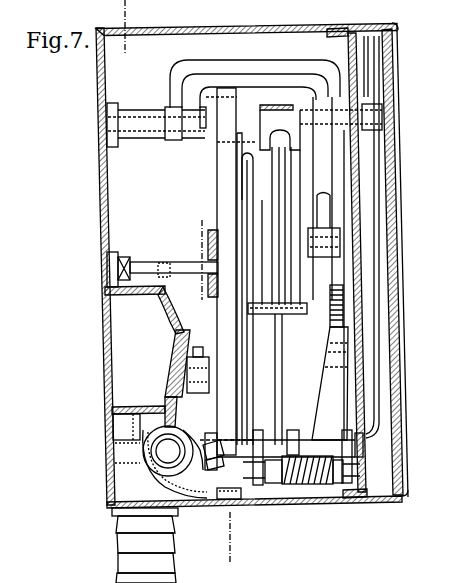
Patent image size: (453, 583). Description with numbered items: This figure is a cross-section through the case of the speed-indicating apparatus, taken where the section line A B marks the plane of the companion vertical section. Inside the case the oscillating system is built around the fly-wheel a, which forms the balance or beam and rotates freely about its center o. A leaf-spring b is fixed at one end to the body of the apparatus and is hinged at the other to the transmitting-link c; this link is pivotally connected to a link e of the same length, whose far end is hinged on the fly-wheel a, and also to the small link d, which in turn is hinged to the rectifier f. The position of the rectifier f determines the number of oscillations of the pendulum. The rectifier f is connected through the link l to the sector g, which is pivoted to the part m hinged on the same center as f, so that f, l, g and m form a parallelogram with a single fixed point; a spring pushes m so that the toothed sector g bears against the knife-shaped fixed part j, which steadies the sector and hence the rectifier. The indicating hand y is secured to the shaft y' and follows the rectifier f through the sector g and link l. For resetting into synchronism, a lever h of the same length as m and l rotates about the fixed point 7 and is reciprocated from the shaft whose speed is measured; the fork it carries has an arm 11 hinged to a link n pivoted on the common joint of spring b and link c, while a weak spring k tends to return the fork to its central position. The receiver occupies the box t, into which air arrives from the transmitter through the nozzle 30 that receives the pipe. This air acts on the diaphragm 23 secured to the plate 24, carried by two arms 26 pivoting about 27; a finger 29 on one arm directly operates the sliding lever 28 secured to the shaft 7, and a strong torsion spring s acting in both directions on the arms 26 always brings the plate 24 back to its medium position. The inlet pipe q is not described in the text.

The section line A B A is at (132, 27).
The section line A B is at (238, 537).
The inlet pipe q is at (138, 117).
The part m is at (242, 92).
The sector g is at (270, 67).
The leaf-spring b is at (273, 117).
The shaft y' is at (358, 83).
The hand y is at (393, 237).
The fly-wheel a is at (226, 168).
The link e is at (248, 173).
The link n is at (275, 225).
The link c is at (286, 225).
The rectifier f is at (350, 162).
The link l is at (324, 198).
The small link d is at (298, 312).
The fixed part j is at (327, 343).
The center o is at (160, 262).
The diaphragm 23 is at (178, 318).
The box t is at (127, 327).
The plate 24 is at (177, 360).
The arms 26 is at (200, 350).
The pivot 27 is at (170, 450).
The finger 29 is at (208, 458).
The sliding lever 28 is at (218, 468).
The spring s is at (202, 503).
The lever h is at (343, 434).
The spring k is at (300, 440).
The fixed point 7 is at (363, 447).
The arm 11 is at (334, 482).
The nozzle 30 is at (125, 557).